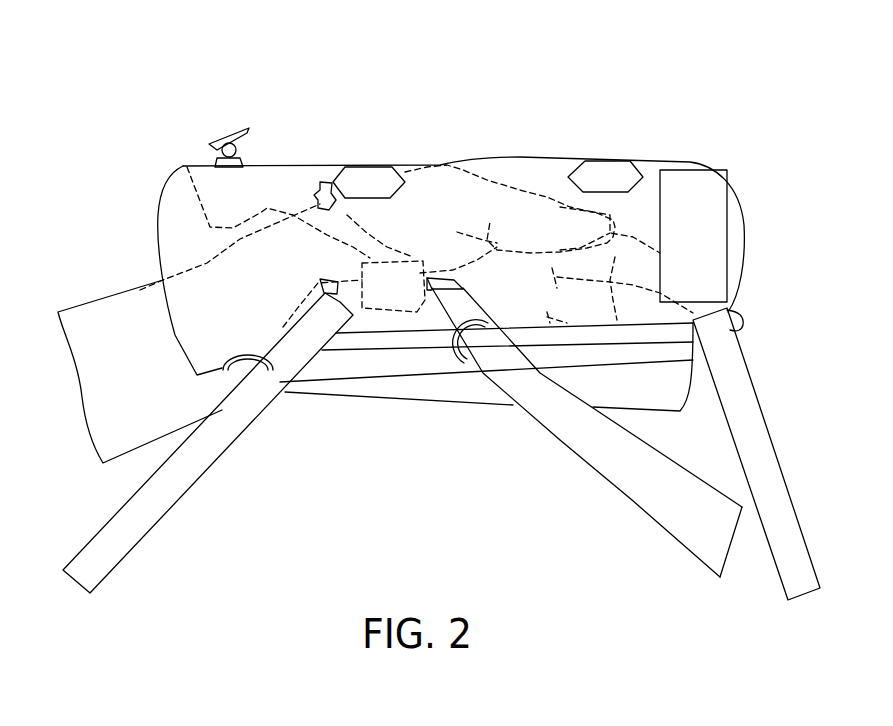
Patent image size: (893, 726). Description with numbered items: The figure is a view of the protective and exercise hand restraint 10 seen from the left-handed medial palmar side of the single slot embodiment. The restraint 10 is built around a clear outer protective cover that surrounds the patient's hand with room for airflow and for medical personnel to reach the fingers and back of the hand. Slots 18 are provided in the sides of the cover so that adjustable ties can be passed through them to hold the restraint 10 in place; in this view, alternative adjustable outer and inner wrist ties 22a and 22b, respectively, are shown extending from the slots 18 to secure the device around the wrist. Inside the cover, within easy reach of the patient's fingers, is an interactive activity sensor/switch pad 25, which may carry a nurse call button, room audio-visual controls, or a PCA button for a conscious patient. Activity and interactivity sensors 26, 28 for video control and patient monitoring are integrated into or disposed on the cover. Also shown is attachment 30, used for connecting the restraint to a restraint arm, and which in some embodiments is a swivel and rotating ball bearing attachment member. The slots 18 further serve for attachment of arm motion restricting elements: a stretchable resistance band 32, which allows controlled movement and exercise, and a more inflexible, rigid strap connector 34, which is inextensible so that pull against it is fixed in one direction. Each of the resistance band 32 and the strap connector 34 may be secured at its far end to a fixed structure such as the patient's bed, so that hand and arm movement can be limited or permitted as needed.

The protective and exercise hand restraint 10 is at (166, 72).
The slots 18 is at (406, 365).
The outer wrist tie 22a is at (452, 338).
The inner wrist tie 22b is at (364, 300).
The interactive activity sensor/switch pad 25 is at (713, 235).
The activity and interactivity sensor 26 is at (608, 168).
The activity and interactivity sensor 28 is at (367, 180).
The attachment 30 is at (212, 153).
The resistance band 32 is at (177, 487).
The rigid strap connector 34 is at (788, 545).